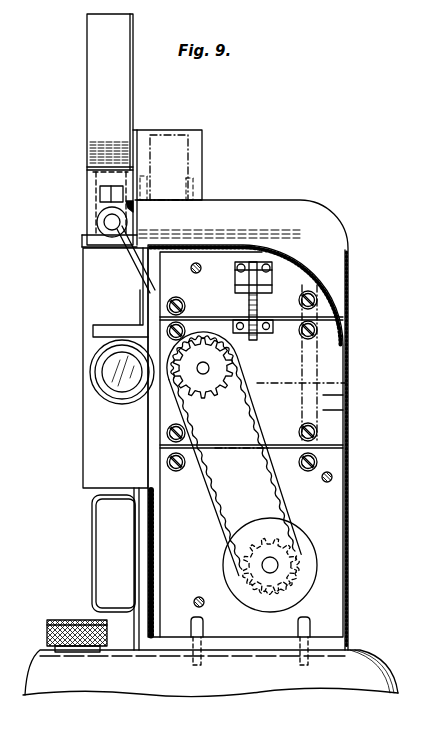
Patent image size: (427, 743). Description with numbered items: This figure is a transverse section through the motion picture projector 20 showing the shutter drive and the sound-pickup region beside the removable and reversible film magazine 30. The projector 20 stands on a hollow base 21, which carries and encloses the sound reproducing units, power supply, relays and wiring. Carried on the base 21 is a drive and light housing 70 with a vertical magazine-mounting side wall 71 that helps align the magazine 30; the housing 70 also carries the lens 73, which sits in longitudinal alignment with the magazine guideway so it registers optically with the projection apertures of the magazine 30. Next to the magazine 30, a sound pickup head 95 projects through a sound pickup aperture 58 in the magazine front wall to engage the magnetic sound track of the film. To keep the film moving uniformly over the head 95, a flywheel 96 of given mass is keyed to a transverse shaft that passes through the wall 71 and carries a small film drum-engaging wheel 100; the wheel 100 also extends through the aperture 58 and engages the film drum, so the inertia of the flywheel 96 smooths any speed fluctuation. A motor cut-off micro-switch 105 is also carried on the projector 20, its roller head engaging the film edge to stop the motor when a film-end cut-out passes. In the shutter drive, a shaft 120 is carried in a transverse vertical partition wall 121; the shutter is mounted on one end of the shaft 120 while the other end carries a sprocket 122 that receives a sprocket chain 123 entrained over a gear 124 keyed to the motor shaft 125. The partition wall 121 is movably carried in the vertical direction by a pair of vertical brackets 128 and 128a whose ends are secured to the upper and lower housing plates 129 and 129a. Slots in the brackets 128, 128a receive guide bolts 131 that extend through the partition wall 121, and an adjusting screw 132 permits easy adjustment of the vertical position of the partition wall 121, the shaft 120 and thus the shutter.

The film magazine 30 is at (82, 42).
The magazine-mounting side wall 71 is at (144, 130).
The flywheel 96 is at (180, 132).
The drive and light housing 70 is at (204, 158).
The sound pickup aperture 58 is at (100, 190).
The film drum-engaging wheel 100 is at (134, 206).
The sound pickup head 95 is at (104, 222).
The motion picture projector 20 is at (338, 212).
The upper housing plate 129 is at (283, 276).
The vertical bracket 128a is at (186, 313).
The adjusting screw 132 is at (259, 302).
The guide bolts 131 is at (318, 332).
The vertical bracket 128 is at (318, 358).
The shaft 120 is at (210, 364).
The sprocket 122 is at (238, 380).
The transverse vertical partition wall 121 is at (333, 405).
The sprocket chain 123 is at (250, 412).
The lower housing plate 129a is at (332, 508).
The gear 124 is at (300, 560).
The motor shaft 125 is at (274, 570).
The motor cut-off micro-switch 105 is at (95, 548).
The hollow base 21 is at (186, 683).
The lens 73 is at (100, 368).